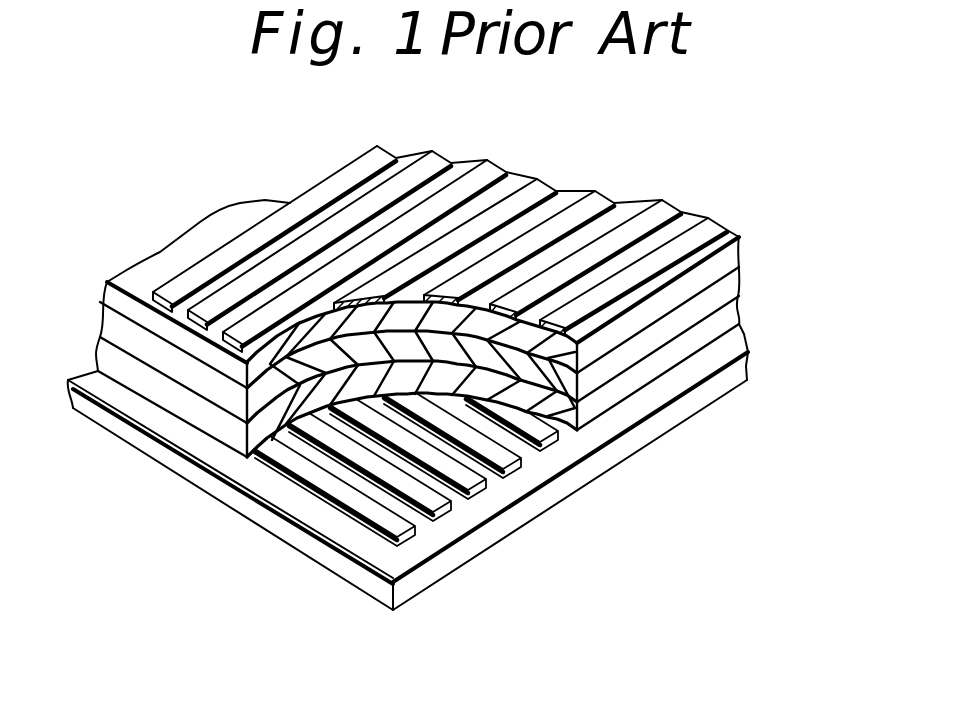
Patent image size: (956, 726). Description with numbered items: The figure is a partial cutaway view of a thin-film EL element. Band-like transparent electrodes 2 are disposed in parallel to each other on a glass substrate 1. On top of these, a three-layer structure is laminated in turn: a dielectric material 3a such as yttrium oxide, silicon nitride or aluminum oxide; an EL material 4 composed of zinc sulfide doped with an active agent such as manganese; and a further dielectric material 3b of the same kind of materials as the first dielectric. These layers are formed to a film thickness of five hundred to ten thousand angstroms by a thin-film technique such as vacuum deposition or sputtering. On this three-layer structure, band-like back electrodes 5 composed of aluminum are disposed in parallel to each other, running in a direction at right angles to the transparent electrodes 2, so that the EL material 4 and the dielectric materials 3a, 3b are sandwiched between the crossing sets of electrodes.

The glass substrate 1 is at (597, 473).
The transparent electrodes 2 is at (320, 480).
The dielectric material 3a is at (195, 408).
The dielectric material 3b is at (160, 270).
The EL material 4 is at (117, 327).
The back electrodes 5 is at (550, 172).